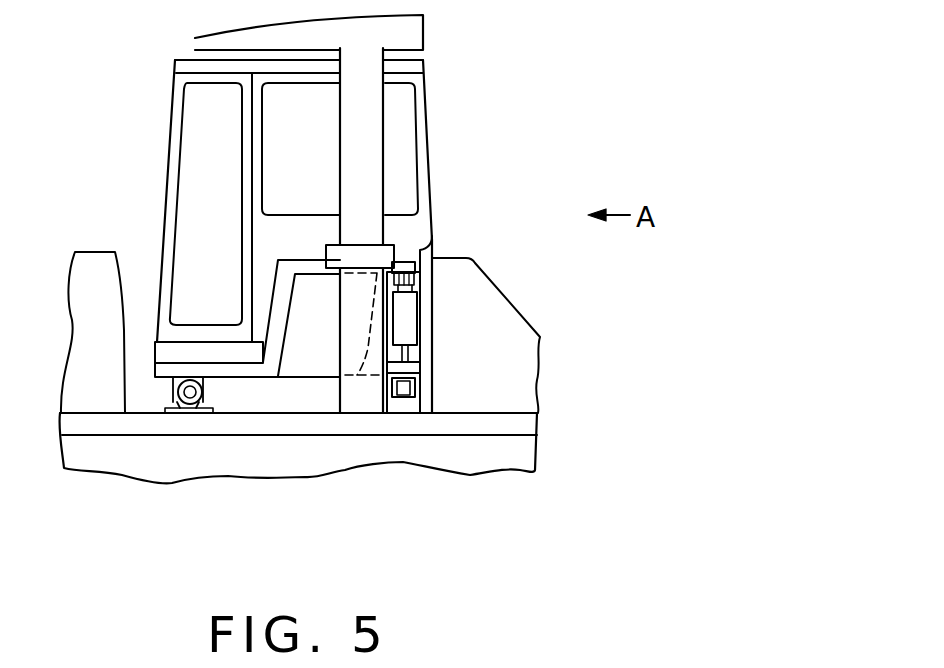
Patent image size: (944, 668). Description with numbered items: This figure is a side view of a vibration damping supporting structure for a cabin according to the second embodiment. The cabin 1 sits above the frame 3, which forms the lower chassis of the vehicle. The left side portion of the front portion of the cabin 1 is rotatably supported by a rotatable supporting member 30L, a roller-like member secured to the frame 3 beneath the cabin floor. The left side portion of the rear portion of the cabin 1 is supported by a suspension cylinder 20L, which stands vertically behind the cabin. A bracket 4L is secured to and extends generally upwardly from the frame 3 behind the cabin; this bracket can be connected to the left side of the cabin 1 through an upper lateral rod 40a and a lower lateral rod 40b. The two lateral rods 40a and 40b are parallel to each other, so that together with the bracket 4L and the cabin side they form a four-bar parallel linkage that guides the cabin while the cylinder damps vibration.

The cabin 1 is at (172, 97).
The frame 3 is at (257, 423).
The bracket 4L is at (347, 392).
The suspension cylinder 20L is at (407, 332).
The rotatable supporting member 30L is at (185, 413).
The upper lateral rod 40a is at (404, 256).
The lower lateral rod 40b is at (403, 393).